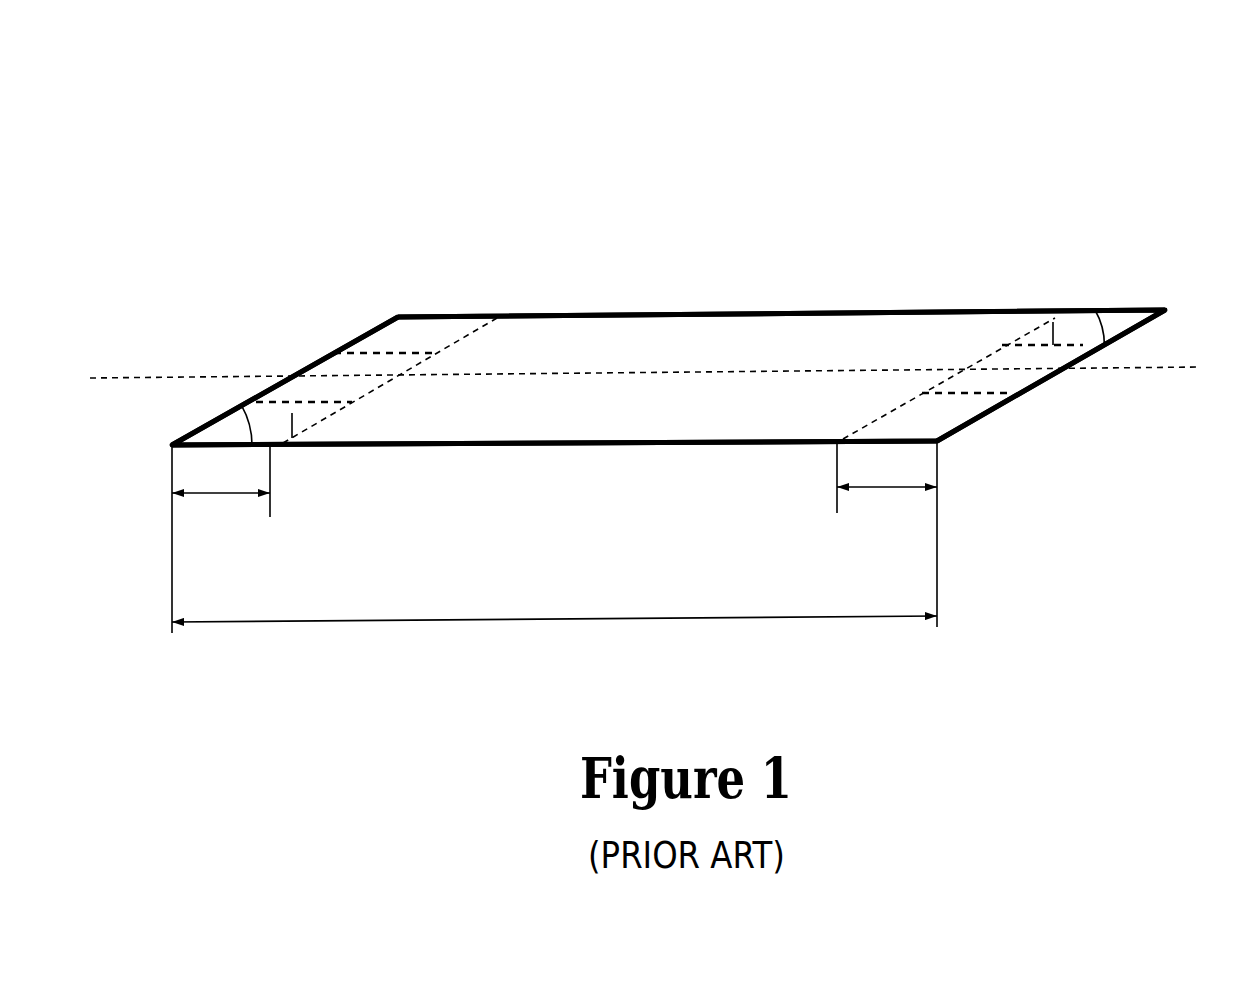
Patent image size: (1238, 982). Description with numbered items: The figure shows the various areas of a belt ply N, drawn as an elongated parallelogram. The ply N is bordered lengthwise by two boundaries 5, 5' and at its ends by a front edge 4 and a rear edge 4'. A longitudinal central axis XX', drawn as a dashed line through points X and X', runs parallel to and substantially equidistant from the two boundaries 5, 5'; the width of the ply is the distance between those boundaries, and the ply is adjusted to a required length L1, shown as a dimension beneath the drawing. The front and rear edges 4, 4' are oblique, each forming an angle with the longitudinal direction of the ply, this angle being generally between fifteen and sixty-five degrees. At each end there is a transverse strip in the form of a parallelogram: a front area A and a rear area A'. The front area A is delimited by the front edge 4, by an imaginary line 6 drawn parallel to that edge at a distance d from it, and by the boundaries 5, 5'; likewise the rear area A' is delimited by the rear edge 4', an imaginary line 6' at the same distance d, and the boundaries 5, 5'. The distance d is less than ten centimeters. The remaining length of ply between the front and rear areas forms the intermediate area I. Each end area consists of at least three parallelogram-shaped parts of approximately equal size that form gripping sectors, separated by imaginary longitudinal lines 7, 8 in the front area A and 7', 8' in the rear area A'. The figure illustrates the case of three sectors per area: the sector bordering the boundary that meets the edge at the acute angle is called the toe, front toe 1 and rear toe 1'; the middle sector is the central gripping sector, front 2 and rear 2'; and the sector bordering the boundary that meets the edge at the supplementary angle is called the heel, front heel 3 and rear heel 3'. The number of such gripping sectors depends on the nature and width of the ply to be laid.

The front toe 1 is at (307, 494).
The front central gripping sector 2 is at (316, 302).
The front heel 3 is at (372, 279).
The front edge 4 is at (285, 353).
The boundary 5 is at (554, 508).
The imaginary line 6 is at (395, 464).
The imaginary longitudinal line 7 is at (323, 488).
The imaginary longitudinal line 8 is at (398, 446).
The boundary 5' is at (781, 248).
The rear toe 1' is at (1050, 260).
The rear central gripping sector 2' is at (1044, 444).
The rear heel 3' is at (978, 471).
The rear edge 4' is at (1051, 397).
The imaginary line 6' is at (966, 285).
The imaginary longitudinal line 7' is at (1027, 261).
The imaginary longitudinal line 8' is at (949, 307).
The front area A is at (167, 215).
The rear area A' is at (1158, 177).
The intermediate area I is at (656, 290).
The belt ply N is at (440, 642).
The longitudinal central axis X is at (642, 397).
The longitudinal central axis X' is at (1205, 390).
The distance d is at (554, 537).
The required length L1 is at (554, 599).